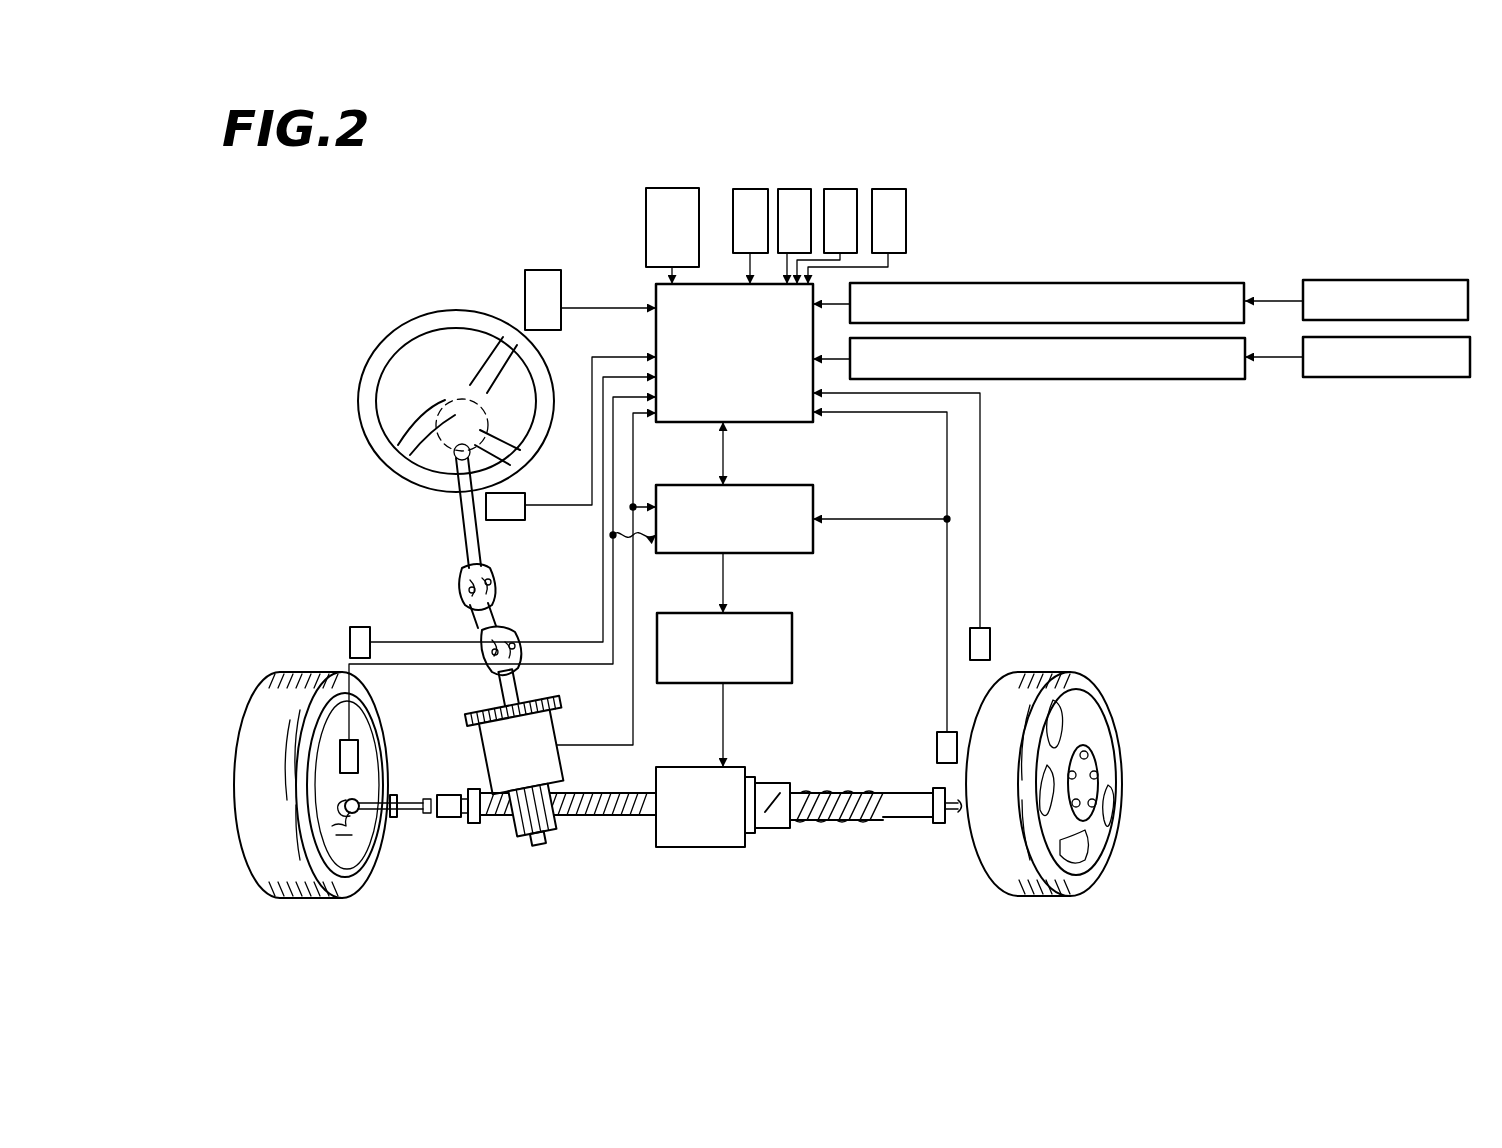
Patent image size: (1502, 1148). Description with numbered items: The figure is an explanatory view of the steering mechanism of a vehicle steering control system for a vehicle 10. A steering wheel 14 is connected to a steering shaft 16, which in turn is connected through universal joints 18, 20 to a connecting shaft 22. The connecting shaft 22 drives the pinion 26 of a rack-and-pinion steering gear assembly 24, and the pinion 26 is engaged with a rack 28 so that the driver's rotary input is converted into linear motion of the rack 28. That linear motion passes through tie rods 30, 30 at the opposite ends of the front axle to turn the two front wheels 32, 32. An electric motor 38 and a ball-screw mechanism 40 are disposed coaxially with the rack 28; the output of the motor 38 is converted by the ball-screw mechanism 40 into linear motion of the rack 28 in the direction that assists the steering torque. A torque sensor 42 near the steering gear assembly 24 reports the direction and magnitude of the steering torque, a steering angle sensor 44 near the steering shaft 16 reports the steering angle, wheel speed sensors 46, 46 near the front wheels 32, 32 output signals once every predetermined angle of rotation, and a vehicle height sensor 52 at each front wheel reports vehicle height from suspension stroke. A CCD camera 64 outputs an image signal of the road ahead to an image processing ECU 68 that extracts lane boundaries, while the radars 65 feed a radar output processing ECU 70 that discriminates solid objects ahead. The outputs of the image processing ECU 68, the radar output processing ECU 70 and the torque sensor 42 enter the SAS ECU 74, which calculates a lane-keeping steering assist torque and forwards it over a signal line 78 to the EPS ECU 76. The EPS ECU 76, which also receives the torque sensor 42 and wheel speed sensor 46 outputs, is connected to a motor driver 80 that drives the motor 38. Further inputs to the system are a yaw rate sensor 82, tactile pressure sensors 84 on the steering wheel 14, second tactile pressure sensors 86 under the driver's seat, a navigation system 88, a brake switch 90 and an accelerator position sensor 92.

The vehicle 10 is at (1030, 578).
The steering wheel 14 is at (385, 335).
The steering shaft 16 is at (462, 522).
The universal joint 18 is at (498, 570).
The universal joint 20 is at (490, 648).
The connecting shaft 22 is at (525, 708).
The rack-and-pinion steering gear assembly 24 is at (497, 825).
The pinion 26 is at (523, 842).
The rack 28 is at (555, 790).
The tie rod 30 is at (363, 800).
The front wheel 32 is at (295, 672).
The electric motor 38 is at (710, 838).
The ball-screw mechanism 40 is at (840, 785).
The torque sensor 42 is at (555, 735).
The steering angle sensor 44 is at (515, 495).
The wheel speed sensor 46 is at (338, 750).
The vehicle height sensor 52 is at (352, 627).
The CCD camera 64 is at (1360, 280).
The radars 65 is at (1355, 378).
The image processing ECU 68 is at (1035, 283).
The radar output processing ECU 70 is at (1045, 380).
The SAS ECU 74 is at (778, 425).
The EPS ECU 76 is at (808, 545).
The signal line 78 is at (718, 448).
The motor driver 80 is at (792, 643).
The yaw rate sensor 82 is at (745, 187).
The tactile pressure sensor 84 is at (540, 268).
The second tactile pressure sensor 86 is at (797, 187).
The navigation system 88 is at (655, 186).
The brake switch 90 is at (842, 187).
The accelerator position sensor 92 is at (887, 187).